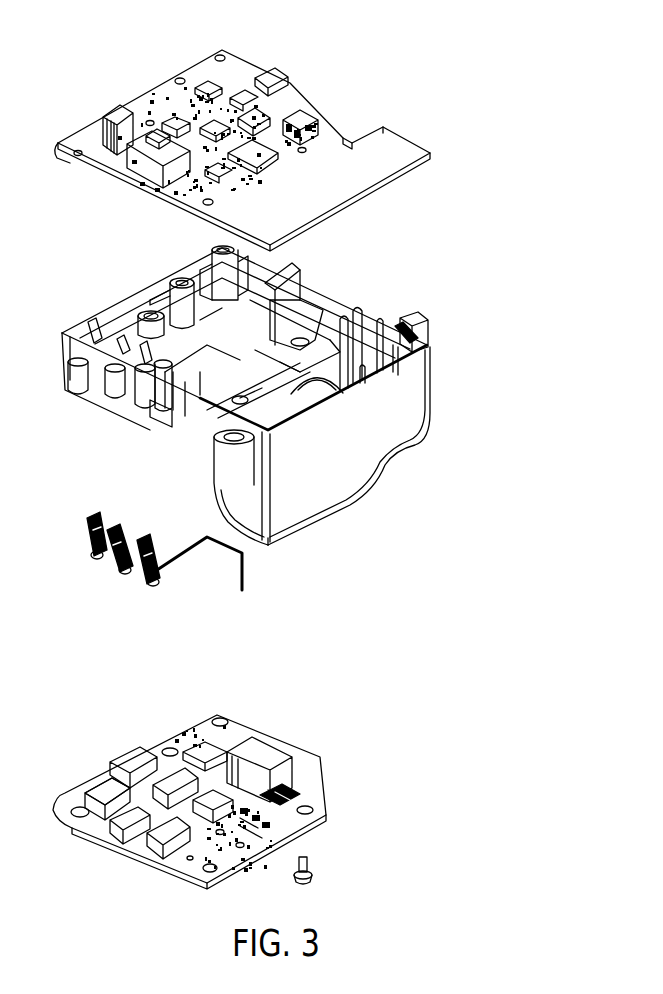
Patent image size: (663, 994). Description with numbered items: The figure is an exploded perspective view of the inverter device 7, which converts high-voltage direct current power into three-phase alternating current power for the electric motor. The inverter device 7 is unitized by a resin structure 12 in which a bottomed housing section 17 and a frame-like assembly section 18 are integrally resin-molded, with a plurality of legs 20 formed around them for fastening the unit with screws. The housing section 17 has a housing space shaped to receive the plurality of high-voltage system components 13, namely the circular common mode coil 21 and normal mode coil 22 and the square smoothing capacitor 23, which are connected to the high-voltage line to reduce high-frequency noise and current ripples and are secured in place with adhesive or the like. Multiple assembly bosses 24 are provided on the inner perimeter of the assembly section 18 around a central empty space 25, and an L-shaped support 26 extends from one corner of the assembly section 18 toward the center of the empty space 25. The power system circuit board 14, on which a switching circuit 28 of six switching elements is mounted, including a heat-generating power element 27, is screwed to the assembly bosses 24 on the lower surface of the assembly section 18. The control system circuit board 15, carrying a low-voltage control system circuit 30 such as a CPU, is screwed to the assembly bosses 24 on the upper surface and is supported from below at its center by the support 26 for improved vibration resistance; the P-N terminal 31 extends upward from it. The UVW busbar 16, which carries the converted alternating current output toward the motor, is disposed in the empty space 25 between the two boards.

The inverter device 7 is at (450, 277).
The resin structure 12 is at (437, 432).
The high-voltage system components 13 is at (390, 333).
The power system circuit board 14 is at (276, 724).
The control system circuit board 15 is at (146, 78).
The busbar 16 is at (250, 568).
The housing section 17 is at (345, 462).
The assembly section 18 is at (116, 300).
The legs 20 is at (223, 472).
The common mode coil 21 is at (400, 363).
The normal mode coil 22 is at (318, 392).
The smoothing capacitor 23 is at (283, 420).
The assembly bosses 24 is at (155, 306).
The empty space 25 is at (254, 324).
The support 26 is at (199, 365).
The power element 27 is at (100, 782).
The switching circuit 28 is at (262, 790).
The control system circuit 30 is at (285, 112).
The P-N terminal 31 is at (356, 303).